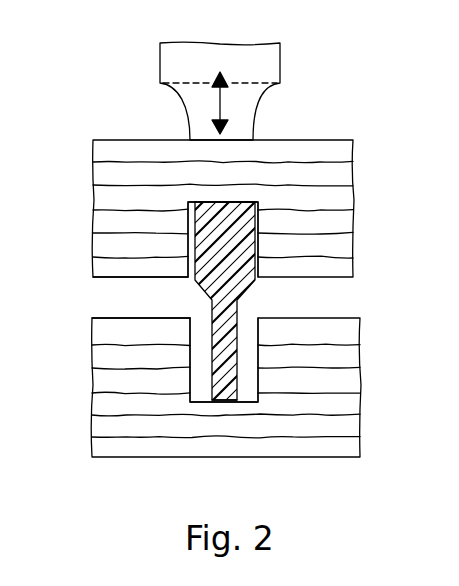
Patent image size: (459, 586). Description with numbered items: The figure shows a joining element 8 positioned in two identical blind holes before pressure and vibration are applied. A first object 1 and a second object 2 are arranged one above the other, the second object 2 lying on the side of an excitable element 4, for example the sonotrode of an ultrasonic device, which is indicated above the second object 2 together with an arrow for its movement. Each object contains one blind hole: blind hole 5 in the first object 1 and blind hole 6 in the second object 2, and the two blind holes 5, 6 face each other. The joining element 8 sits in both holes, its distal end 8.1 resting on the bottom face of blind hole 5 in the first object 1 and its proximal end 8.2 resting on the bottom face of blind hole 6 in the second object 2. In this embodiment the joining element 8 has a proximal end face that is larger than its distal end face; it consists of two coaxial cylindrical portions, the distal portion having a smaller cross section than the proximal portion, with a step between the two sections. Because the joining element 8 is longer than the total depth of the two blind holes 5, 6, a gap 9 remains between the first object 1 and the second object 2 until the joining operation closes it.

The first object 1 is at (343, 405).
The second object 2 is at (337, 197).
The excitable element 4 is at (267, 65).
The blind hole 5 is at (198, 330).
The blind hole 6 is at (190, 245).
The joining element 8 is at (243, 292).
The distal end 8.1 is at (218, 395).
The proximal end 8.2 is at (227, 215).
The gap 9 is at (118, 293).